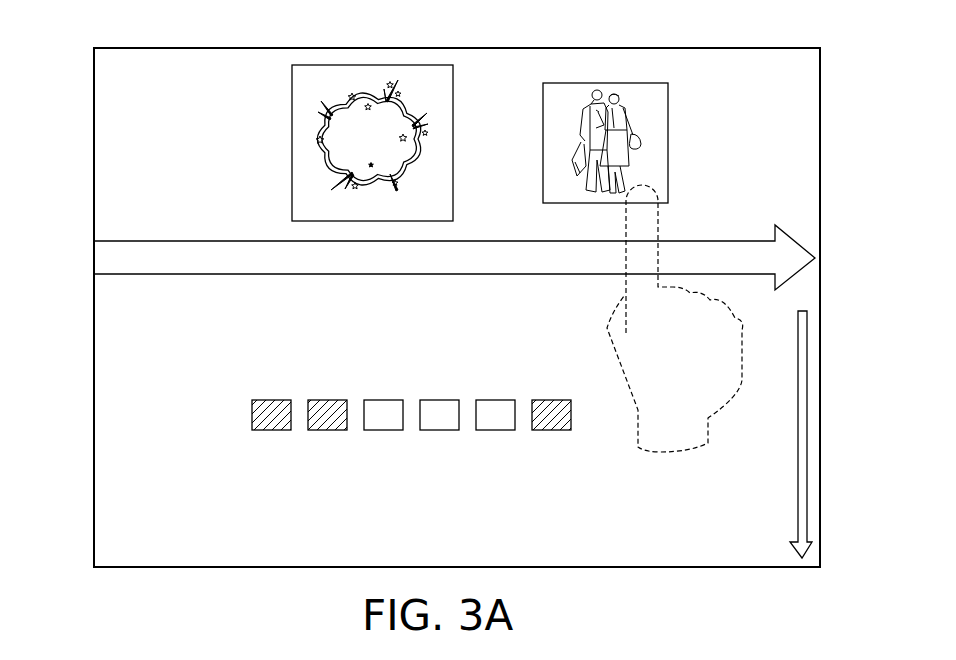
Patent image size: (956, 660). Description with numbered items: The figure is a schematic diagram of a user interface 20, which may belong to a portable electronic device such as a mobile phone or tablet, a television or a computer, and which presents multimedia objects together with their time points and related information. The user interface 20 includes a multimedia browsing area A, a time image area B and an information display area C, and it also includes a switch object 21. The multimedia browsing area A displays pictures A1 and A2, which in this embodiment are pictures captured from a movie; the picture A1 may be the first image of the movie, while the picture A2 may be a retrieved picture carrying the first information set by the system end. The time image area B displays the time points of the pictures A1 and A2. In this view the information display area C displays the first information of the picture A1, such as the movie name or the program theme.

The user interface 20 is at (747, 48).
The switch object 21 is at (802, 530).
The multimedia browsing area A is at (118, 176).
The picture A1 is at (373, 66).
The picture A2 is at (605, 83).
The time image area B is at (108, 258).
The information display area C is at (108, 405).